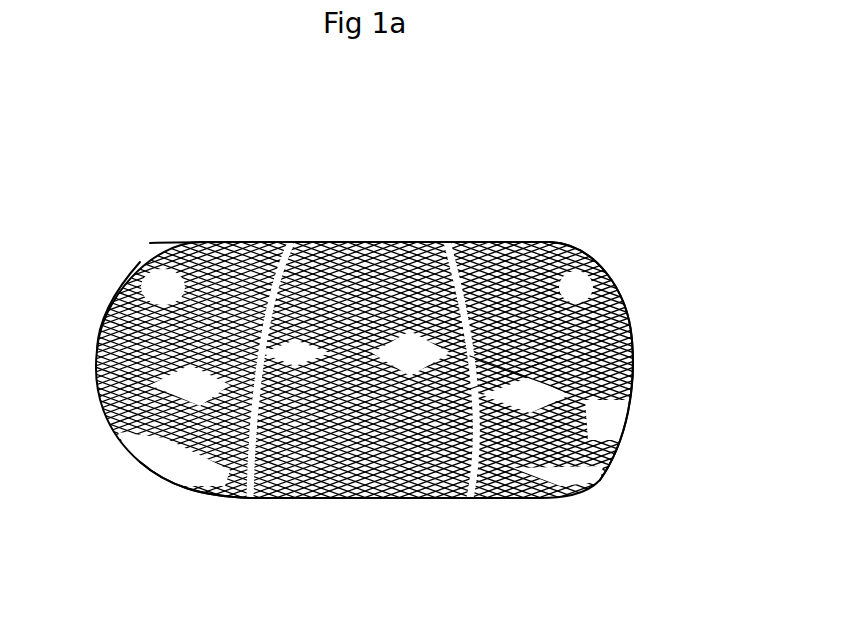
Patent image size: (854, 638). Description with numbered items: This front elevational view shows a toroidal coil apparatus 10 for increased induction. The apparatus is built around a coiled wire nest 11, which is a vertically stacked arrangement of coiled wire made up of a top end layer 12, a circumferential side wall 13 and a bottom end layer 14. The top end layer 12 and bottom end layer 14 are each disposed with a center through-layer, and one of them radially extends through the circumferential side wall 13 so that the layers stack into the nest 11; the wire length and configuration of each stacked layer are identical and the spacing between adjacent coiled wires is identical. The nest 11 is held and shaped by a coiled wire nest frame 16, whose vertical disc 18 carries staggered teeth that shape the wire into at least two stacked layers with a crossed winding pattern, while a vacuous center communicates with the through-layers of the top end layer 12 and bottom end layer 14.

The toroidal coil apparatus 10 is at (353, 515).
The coiled wire nest 11 is at (220, 310).
The top end layer 12 is at (220, 240).
The circumferential side wall 13 is at (617, 317).
The bottom end layer 14 is at (232, 483).
The coiled wire nest frame 16 is at (580, 338).
The vertical disc 18 is at (480, 377).